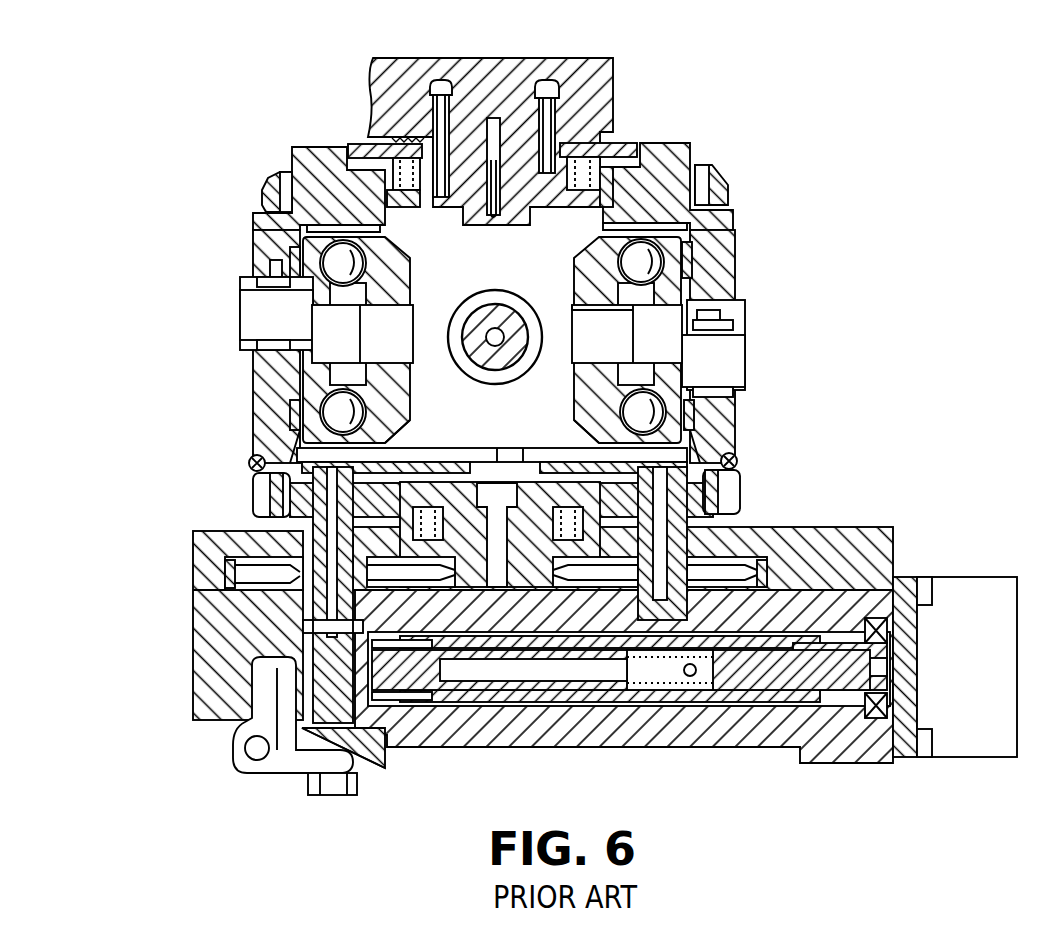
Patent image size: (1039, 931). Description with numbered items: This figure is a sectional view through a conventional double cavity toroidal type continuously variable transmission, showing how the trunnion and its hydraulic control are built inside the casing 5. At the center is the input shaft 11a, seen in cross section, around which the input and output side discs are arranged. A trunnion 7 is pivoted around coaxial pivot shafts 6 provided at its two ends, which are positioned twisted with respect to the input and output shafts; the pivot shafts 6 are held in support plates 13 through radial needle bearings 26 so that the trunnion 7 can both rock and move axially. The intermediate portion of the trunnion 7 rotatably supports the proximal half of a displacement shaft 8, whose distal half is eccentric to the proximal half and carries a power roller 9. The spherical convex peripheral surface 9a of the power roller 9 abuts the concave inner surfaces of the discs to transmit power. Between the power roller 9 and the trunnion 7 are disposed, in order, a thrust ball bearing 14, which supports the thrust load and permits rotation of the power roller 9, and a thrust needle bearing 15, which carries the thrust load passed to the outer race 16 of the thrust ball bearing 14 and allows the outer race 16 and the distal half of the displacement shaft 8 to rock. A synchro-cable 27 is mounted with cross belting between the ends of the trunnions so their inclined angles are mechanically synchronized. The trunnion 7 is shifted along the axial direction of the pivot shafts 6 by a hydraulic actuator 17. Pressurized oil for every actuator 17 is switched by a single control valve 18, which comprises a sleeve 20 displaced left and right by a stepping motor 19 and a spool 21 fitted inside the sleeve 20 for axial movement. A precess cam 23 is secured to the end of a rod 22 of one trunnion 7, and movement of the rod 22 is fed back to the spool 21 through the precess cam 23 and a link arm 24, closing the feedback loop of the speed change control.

The casing 5 is at (590, 92).
The pivot shaft 6 is at (318, 162).
The trunnion 7 is at (262, 377).
The displacement shaft 8 is at (325, 337).
The power roller 9 is at (392, 265).
The peripheral surface 9a is at (395, 420).
The input shaft 11a is at (492, 306).
The support plate 13 is at (583, 206).
The thrust ball bearing 14 is at (335, 412).
The thrust needle bearing 15 is at (292, 253).
The outer race 16 is at (268, 264).
The hydraulic actuator 17 is at (310, 552).
The control valve 18 is at (695, 732).
The stepping motor 19 is at (957, 577).
The sleeve 20 is at (735, 692).
The spool 21 is at (560, 690).
The rod 22 is at (318, 597).
The precess cam 23 is at (380, 752).
The link arm 24 is at (240, 757).
The radial needle bearing 26 is at (268, 183).
The synchro-cable 27 is at (518, 458).